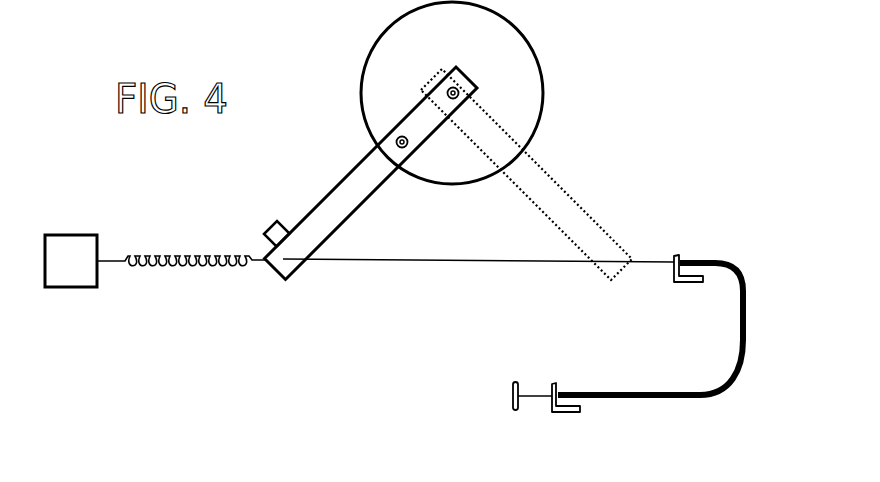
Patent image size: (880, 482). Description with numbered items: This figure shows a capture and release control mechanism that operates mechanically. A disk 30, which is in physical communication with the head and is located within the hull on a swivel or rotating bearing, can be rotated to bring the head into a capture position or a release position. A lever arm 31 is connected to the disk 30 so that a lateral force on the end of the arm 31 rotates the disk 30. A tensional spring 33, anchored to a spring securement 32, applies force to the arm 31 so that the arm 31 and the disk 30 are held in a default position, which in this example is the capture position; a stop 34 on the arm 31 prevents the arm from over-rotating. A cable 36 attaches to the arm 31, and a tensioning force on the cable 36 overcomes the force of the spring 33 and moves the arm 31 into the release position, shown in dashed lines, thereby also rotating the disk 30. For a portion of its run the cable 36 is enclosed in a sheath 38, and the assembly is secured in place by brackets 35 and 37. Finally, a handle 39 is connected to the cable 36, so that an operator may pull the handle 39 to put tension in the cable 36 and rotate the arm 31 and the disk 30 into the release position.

The disk 30 is at (517, 45).
The lever arm 31 is at (332, 200).
The spring securement 32 is at (71, 243).
The tensional spring 33 is at (174, 232).
The stop 34 is at (270, 225).
The bracket 35 is at (673, 280).
The cable 36 is at (480, 263).
The bracket 37 is at (555, 383).
The sheath 38 is at (750, 347).
The handle 39 is at (512, 388).